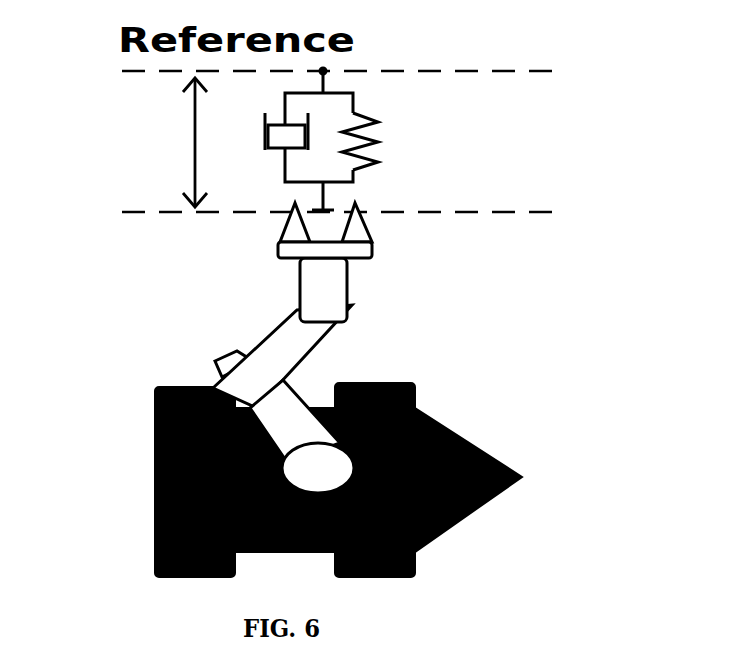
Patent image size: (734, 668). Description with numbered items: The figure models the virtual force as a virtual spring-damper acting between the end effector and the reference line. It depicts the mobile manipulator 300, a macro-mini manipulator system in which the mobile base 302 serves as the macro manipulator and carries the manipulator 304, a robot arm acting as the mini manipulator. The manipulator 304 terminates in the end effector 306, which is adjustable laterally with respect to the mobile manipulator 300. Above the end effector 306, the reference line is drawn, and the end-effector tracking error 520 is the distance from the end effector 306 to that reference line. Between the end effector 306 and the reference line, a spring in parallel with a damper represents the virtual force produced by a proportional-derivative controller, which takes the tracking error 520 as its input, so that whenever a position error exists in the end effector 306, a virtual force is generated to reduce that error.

The mobile manipulator 300 is at (400, 402).
The mobile base 302 is at (387, 543).
The manipulator 304 is at (247, 350).
The end effector 306 is at (357, 228).
The end-effector tracking error 520 is at (137, 147).